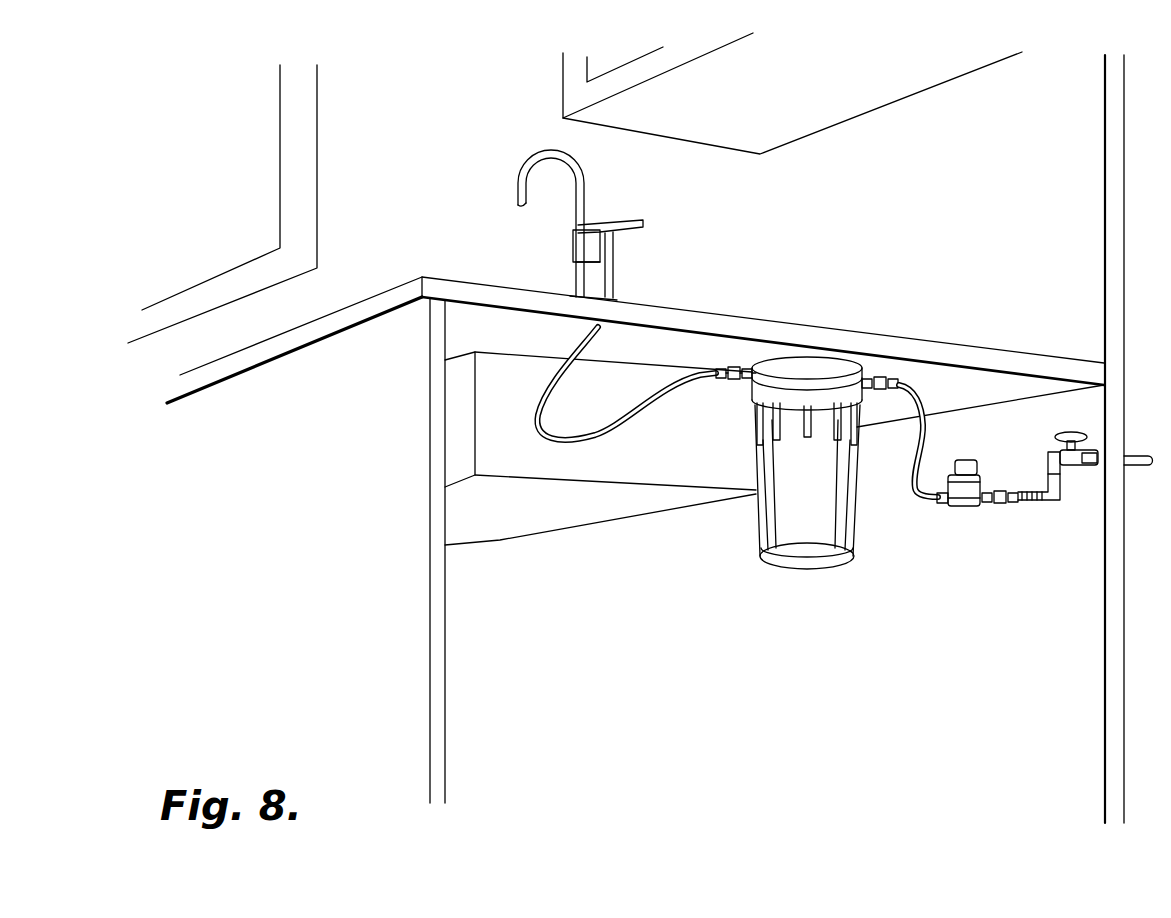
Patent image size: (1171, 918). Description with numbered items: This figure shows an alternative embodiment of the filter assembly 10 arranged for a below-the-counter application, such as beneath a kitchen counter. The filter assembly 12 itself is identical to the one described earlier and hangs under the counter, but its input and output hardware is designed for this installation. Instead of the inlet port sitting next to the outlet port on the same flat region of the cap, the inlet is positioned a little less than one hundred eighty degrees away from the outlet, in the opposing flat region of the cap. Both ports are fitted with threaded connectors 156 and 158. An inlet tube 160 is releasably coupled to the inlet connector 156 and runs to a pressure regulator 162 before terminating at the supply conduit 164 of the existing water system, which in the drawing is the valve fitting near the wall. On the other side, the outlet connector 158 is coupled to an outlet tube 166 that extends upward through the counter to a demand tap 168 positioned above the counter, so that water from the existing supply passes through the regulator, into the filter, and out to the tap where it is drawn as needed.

The filter assembly 10 is at (791, 411).
The filter assembly 12 is at (797, 565).
The threaded connector 156 is at (870, 380).
The threaded connector 158 is at (740, 372).
The inlet tube 160 is at (918, 437).
The pressure regulator 162 is at (962, 507).
The supply conduit 164 is at (1052, 483).
The outlet tube 166 is at (612, 437).
The demand tap 168 is at (572, 248).